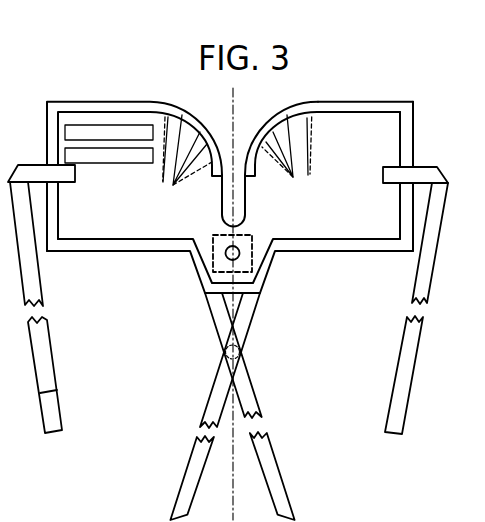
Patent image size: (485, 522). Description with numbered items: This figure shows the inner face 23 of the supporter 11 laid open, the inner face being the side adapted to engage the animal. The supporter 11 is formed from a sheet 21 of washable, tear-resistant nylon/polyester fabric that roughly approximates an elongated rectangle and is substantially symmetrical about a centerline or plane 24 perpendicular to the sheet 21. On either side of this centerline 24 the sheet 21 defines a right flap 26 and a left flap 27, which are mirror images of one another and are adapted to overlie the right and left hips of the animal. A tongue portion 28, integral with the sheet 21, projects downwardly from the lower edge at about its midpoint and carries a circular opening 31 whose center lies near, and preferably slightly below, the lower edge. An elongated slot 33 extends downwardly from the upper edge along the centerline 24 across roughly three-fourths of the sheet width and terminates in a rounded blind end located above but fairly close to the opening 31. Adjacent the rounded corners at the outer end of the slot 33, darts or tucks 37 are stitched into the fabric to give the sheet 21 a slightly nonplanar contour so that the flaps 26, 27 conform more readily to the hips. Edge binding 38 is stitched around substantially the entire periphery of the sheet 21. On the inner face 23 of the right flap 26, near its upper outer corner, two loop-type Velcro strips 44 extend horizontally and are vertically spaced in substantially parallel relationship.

The supporter 11 is at (82, 92).
The sheet 21 is at (375, 212).
The inner face 23 is at (161, 168).
The centerline or plane 24 is at (232, 135).
The right flap 26 is at (85, 223).
The left flap 27 is at (387, 141).
The tongue portion 28 is at (256, 252).
The circular opening 31 is at (225, 253).
The slot 33 is at (245, 207).
The darts or tucks 37 is at (312, 139).
The edge binding 38 is at (386, 101).
The loop-type Velcro strips 44 is at (117, 132).